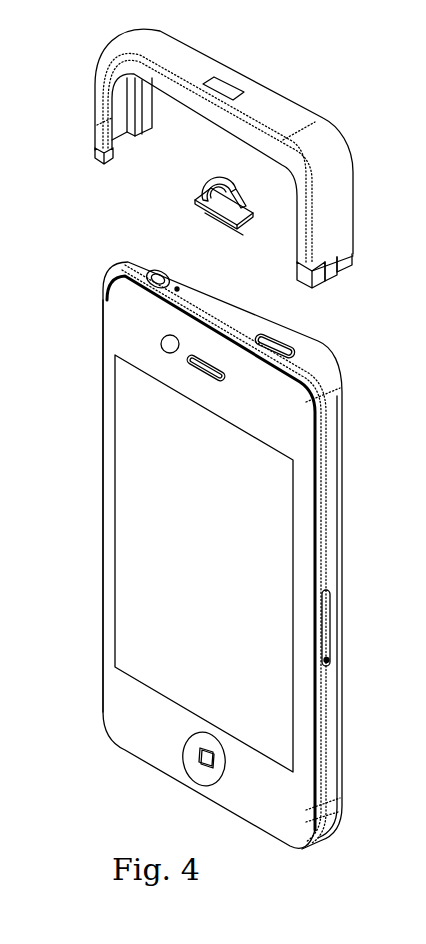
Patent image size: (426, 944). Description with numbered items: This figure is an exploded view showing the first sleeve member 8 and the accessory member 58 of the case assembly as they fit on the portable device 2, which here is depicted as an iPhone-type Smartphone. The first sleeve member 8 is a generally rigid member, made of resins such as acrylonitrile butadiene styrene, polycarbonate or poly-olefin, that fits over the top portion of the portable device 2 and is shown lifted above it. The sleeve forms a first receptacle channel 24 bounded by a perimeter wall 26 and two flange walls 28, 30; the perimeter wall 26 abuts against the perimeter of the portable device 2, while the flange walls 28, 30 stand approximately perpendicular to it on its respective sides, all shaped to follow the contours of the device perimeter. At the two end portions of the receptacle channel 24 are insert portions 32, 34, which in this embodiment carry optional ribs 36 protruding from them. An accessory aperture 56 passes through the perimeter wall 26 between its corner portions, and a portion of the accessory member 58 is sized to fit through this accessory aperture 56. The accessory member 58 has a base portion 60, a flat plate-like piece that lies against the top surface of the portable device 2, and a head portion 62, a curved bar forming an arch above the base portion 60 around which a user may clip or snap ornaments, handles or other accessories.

The portable device 2 is at (346, 622).
The first sleeve member 8 is at (264, 80).
The first receptacle channel 24 is at (124, 106).
The perimeter wall 26 is at (277, 118).
The flange wall 28 is at (116, 98).
The flange wall 30 is at (142, 97).
The insert portion 32 is at (352, 256).
The insert portion 34 is at (97, 160).
The ribs 36 is at (333, 276).
The accessory aperture 56 is at (220, 78).
The accessory member 58 is at (244, 238).
The base portion 60 is at (196, 203).
The head portion 62 is at (222, 182).